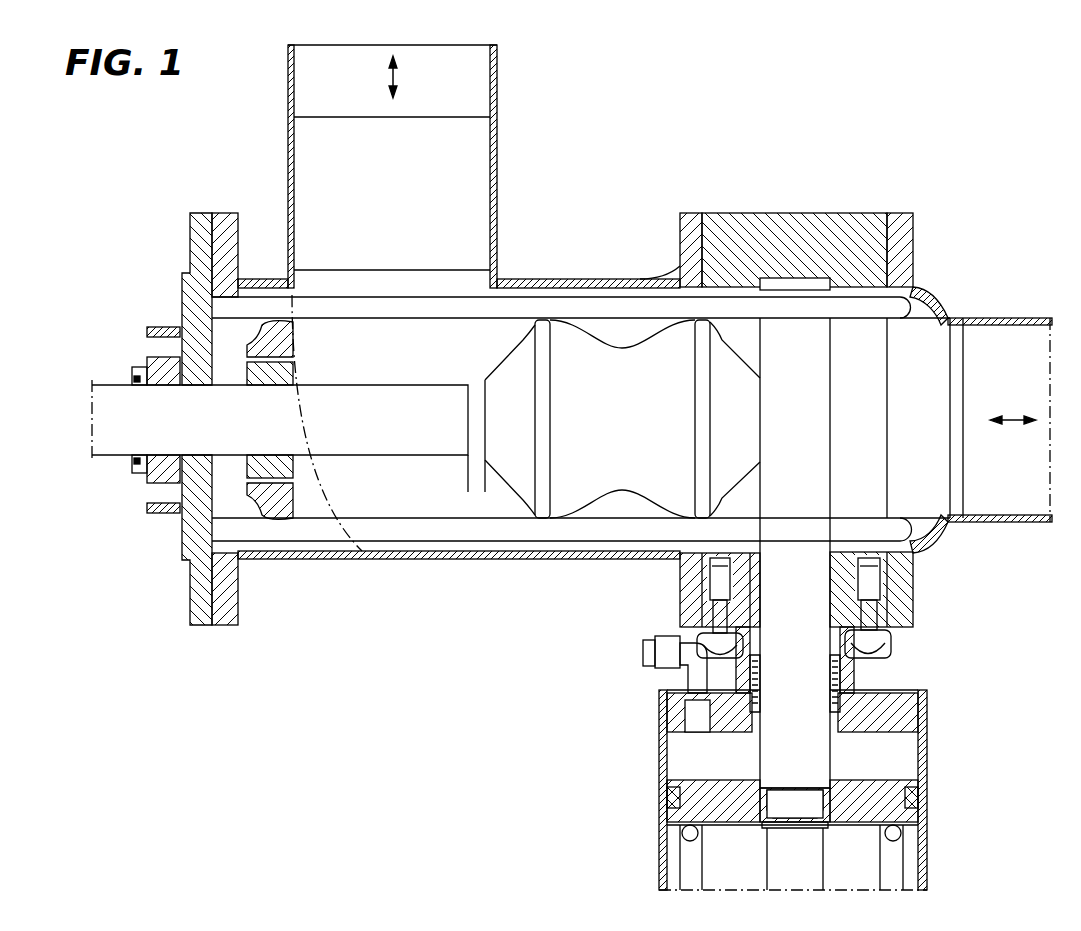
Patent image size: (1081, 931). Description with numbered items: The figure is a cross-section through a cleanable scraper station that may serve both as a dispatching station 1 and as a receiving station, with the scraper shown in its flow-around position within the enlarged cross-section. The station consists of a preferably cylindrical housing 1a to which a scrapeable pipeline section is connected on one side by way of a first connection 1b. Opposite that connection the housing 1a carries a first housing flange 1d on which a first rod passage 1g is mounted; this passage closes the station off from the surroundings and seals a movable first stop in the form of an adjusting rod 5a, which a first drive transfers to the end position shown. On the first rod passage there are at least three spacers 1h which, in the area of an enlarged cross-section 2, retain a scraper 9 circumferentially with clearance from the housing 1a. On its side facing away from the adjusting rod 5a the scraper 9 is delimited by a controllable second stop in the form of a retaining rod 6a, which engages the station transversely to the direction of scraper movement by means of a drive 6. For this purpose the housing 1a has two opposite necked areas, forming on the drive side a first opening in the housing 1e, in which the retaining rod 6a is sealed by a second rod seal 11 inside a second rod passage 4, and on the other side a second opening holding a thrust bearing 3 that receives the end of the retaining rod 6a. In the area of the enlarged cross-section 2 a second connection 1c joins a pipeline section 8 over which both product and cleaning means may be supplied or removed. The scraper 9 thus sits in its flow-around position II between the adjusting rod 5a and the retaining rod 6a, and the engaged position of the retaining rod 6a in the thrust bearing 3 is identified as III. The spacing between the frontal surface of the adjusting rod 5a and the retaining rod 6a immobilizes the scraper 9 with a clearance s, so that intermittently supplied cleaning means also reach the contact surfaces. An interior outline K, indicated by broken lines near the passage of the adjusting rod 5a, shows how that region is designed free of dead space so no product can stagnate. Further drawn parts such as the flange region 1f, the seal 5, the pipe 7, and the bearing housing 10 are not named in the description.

The dispatching station 1 is at (473, 556).
The housing 1a is at (565, 279).
The first connection 1b is at (943, 317).
The second connection 1c is at (497, 172).
The first housing flange 1d is at (236, 588).
The first opening in the housing 1e is at (906, 614).
The housing wall portion 1f is at (882, 230).
The first rod passage 1g is at (200, 590).
The spacers 1h is at (365, 312).
The enlarged cross-section 2 is at (545, 545).
The thrust bearing 3 is at (752, 230).
The second rod passage 4 is at (882, 591).
The seal 5 is at (140, 478).
The adjusting rod 5a is at (405, 430).
The drive 6 is at (930, 733).
The retaining rod 6a is at (815, 400).
The pipe 7 is at (1010, 317).
The pipeline section 8 is at (290, 71).
The scraper 9 is at (662, 400).
The bearing housing 10 is at (178, 330).
The second rod seal 11 is at (880, 571).
The interior outline K is at (305, 472).
The flow-around position II is at (617, 347).
The engaged position III is at (835, 278).
The clearance s is at (498, 485).